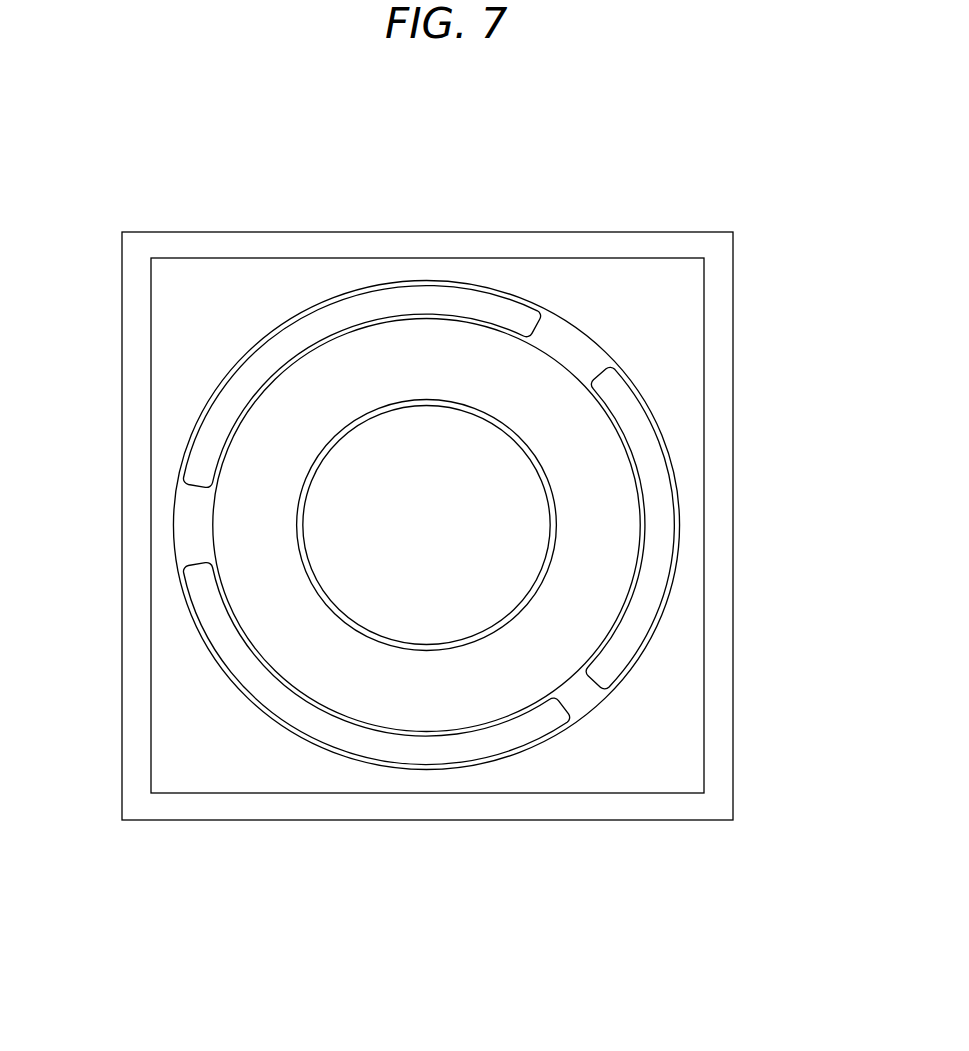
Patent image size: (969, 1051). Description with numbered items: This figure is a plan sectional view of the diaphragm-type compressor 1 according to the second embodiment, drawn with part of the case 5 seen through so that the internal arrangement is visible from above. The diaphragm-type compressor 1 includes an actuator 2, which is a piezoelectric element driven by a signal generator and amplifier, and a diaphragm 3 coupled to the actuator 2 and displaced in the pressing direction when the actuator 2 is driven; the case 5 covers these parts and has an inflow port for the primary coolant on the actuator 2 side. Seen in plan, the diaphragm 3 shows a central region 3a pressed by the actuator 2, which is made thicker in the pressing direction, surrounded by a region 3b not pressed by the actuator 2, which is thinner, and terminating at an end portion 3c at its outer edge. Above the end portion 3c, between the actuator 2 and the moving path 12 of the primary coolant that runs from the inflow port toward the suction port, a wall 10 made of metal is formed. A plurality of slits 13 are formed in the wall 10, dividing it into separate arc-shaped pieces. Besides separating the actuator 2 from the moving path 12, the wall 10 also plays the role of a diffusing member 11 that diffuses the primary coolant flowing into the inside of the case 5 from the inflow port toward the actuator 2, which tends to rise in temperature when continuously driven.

The diaphragm-type compressor 1 is at (728, 178).
The actuator 2 is at (437, 527).
The diaphragm 3 is at (360, 448).
The region pressed by the actuator 3a is at (320, 458).
The region not pressed by the actuator 3b is at (317, 407).
The end portion of the diaphragm 3c is at (395, 286).
The case 5 is at (720, 640).
The wall 10 is at (517, 538).
The diffusing member 11 is at (320, 327).
The moving path of the primary coolant 12 is at (650, 742).
The slits 13 is at (582, 334).